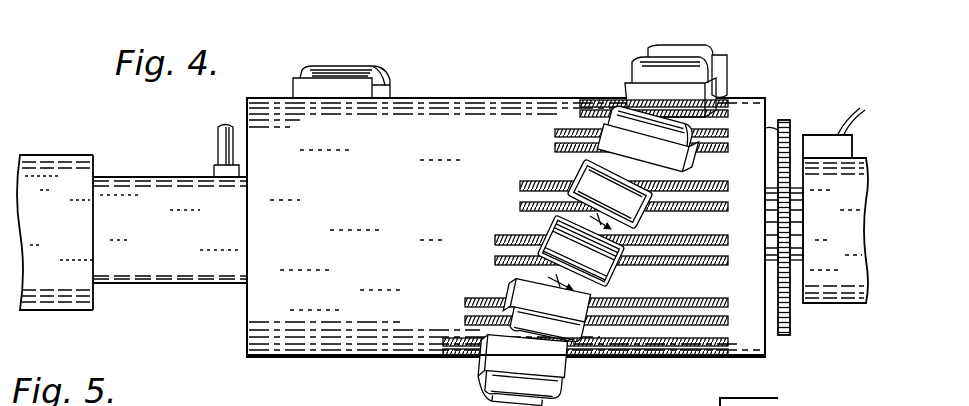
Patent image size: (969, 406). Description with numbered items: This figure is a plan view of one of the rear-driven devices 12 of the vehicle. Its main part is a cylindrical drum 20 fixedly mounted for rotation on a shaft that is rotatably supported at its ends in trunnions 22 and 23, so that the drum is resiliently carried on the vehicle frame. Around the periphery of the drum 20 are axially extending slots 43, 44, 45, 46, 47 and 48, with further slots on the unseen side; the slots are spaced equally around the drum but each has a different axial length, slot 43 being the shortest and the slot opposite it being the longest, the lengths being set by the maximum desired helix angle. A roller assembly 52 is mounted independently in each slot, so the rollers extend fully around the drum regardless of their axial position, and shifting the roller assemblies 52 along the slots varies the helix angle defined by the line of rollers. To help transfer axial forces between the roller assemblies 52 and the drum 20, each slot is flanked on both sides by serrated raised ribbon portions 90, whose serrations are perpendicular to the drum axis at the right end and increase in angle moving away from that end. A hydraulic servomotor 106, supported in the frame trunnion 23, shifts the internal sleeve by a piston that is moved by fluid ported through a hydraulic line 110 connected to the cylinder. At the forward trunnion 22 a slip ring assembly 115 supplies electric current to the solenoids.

The rear-driven device 12 is at (402, 378).
The cylindrical drum 20 is at (422, 106).
The trunnion 22 is at (838, 282).
The trunnion 23 is at (60, 165).
The slot 43 is at (612, 100).
The slot 44 is at (568, 140).
The slot 45 is at (536, 193).
The slot 46 is at (510, 249).
The slot 47 is at (471, 310).
The slot 48 is at (452, 345).
The roller assembly 52 is at (353, 64).
The serrated raised ribbon portion 90 is at (681, 318).
The hydraulic servomotor 106 is at (156, 273).
The hydraulic line 110 is at (219, 143).
The slip ring assembly 115 is at (812, 118).